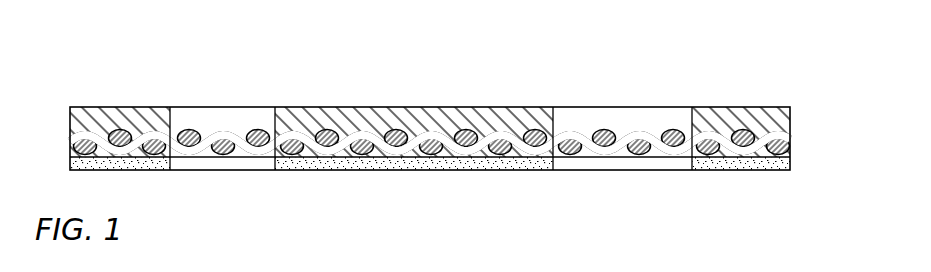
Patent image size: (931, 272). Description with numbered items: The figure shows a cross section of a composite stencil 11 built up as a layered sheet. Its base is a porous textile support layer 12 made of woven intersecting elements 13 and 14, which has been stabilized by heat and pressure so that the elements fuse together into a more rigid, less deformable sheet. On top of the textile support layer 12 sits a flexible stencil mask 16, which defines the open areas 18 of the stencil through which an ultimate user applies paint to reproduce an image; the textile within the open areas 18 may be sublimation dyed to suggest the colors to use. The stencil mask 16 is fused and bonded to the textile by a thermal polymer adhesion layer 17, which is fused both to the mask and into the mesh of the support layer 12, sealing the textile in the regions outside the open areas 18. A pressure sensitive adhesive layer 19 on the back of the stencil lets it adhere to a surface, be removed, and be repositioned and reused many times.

The composite stencil 11 is at (436, 66).
The porous textile support layer 12 is at (625, 157).
The woven intersecting element 13 is at (227, 134).
The woven intersecting element 14 is at (607, 131).
The flexible stencil mask 16 is at (400, 107).
The thermal polymer adhesion layer 17 is at (790, 139).
The open areas 18 is at (204, 118).
The pressure sensitive adhesive layer 19 is at (790, 163).